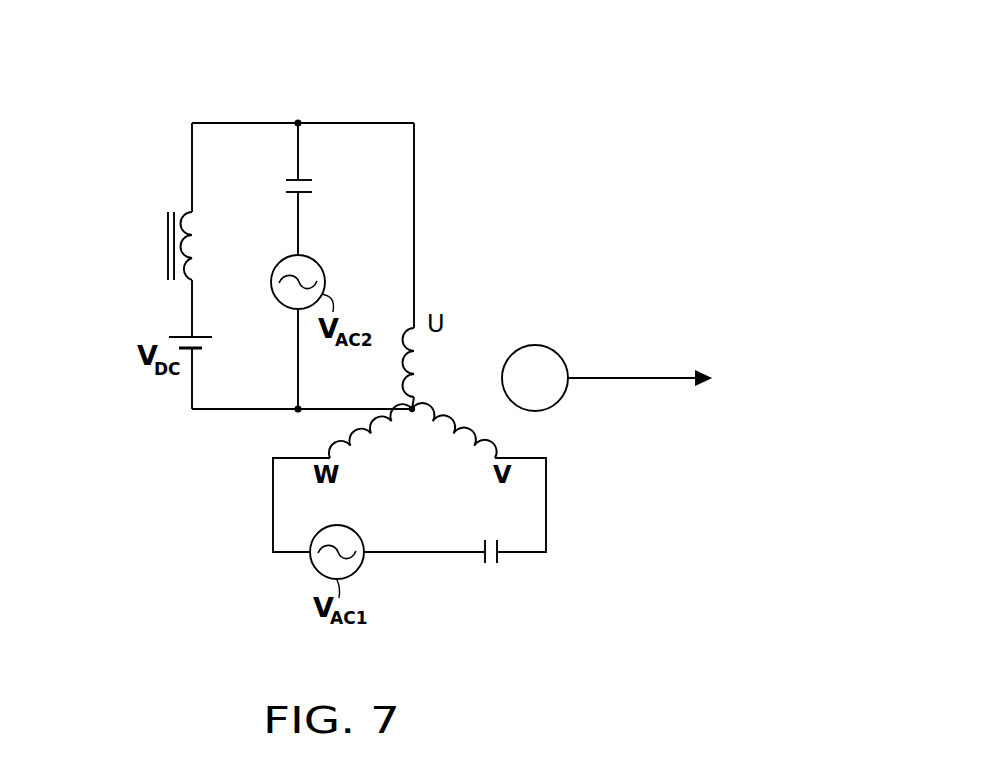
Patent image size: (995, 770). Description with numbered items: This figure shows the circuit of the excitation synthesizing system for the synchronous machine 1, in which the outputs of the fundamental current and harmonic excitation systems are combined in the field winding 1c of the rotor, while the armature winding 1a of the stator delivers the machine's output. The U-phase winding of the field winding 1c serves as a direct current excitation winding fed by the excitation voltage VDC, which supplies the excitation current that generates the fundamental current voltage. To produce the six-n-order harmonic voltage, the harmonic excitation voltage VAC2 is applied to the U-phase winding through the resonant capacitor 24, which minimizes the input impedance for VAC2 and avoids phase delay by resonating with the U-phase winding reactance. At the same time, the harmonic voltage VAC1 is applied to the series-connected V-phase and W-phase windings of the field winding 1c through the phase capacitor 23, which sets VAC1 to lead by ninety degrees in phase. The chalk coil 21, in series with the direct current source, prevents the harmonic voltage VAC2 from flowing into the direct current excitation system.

The synchronous machine 1 is at (640, 63).
The armature winding 1a is at (568, 362).
The field winding 1c is at (422, 390).
The chalk coil 21 is at (166, 235).
The phase capacitor 23 is at (487, 563).
The resonant capacitor 24 is at (302, 178).